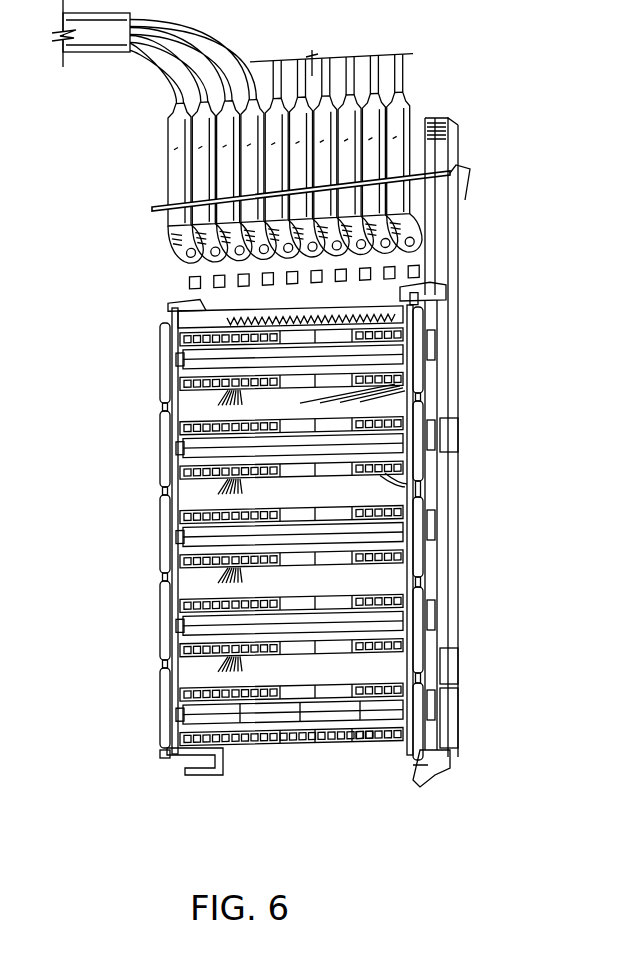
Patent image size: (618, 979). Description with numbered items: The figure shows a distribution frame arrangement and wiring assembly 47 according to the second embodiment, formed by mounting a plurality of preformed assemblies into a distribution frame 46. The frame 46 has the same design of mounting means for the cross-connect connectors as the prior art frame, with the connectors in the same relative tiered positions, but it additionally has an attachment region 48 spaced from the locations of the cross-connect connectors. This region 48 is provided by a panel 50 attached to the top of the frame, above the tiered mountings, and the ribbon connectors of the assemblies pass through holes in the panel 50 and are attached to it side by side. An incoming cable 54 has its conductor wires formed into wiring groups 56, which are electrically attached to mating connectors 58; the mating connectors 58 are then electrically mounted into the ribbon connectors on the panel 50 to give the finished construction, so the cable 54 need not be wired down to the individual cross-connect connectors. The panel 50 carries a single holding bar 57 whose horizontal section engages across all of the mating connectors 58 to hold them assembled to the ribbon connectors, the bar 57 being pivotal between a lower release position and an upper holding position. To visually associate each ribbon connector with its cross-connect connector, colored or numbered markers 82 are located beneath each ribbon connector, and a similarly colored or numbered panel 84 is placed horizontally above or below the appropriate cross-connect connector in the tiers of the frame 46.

The incoming cable 54 is at (107, 37).
The wiring groups 56 is at (172, 72).
The mating connectors 58 is at (251, 180).
The holding bar 57 is at (397, 180).
The attachment region 48 is at (286, 198).
The panel 50 is at (305, 277).
The markers 82 is at (190, 296).
The numbered panel 84 is at (184, 366).
The distribution frame arrangement and wiring assembly 47 is at (325, 452).
The distribution frame 46 is at (147, 467).